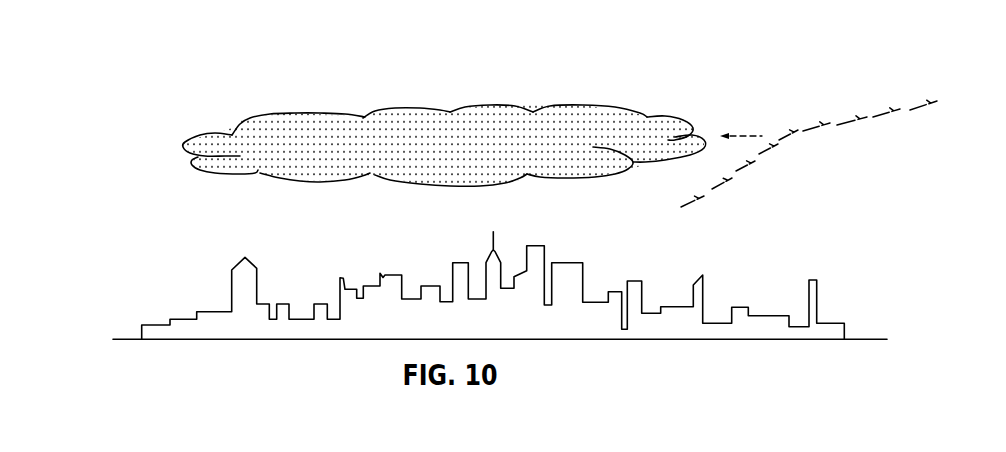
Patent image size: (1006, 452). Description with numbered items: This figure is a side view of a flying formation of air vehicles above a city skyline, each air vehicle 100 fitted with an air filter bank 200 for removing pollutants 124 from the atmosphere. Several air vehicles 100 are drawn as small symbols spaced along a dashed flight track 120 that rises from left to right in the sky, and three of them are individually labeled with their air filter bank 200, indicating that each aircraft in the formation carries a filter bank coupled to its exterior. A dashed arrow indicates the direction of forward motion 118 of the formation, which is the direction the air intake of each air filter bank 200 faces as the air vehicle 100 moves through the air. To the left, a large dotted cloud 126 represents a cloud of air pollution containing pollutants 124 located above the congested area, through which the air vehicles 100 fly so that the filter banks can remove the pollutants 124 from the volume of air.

The air vehicle 100 is at (854, 124).
The direction of forward motion 118 is at (742, 128).
The flight path 120 is at (826, 126).
The pollutants 124 is at (413, 118).
The cloud 126 is at (433, 123).
The air filter bank 200 is at (890, 113).